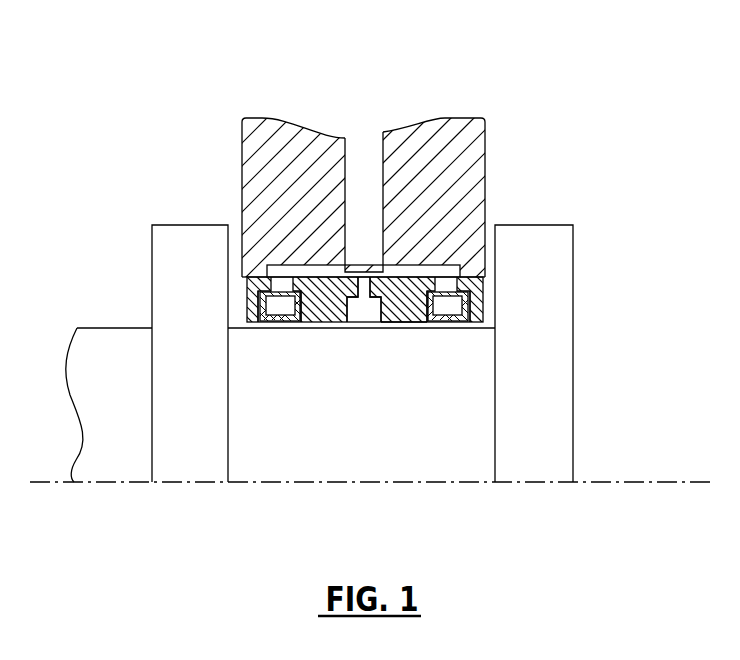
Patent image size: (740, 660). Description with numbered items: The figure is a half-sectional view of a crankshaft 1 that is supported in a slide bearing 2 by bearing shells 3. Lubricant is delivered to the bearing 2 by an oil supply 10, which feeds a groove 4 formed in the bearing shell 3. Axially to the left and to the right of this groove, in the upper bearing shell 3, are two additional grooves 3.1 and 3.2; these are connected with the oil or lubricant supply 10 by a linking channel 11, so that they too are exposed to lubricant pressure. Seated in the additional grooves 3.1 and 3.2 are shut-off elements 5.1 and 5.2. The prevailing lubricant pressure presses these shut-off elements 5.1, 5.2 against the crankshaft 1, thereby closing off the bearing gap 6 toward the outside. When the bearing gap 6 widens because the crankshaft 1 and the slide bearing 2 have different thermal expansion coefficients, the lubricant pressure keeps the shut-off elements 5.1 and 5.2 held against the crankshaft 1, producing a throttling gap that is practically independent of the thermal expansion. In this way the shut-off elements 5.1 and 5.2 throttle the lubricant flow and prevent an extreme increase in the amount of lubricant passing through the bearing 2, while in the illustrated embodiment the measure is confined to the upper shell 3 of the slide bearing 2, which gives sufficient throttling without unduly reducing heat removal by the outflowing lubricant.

The crankshaft 1 is at (379, 461).
The slide bearing 2 is at (435, 148).
The bearing shell 3 is at (337, 300).
The additional groove 3.1 is at (278, 301).
The additional groove 3.2 is at (450, 304).
The groove 4 is at (358, 312).
The shut-off element 5.1 is at (287, 322).
The shut-off element 5.2 is at (451, 322).
The bearing gap 6 is at (406, 322).
The oil supply 10 is at (364, 202).
The linking channel 11 is at (425, 272).